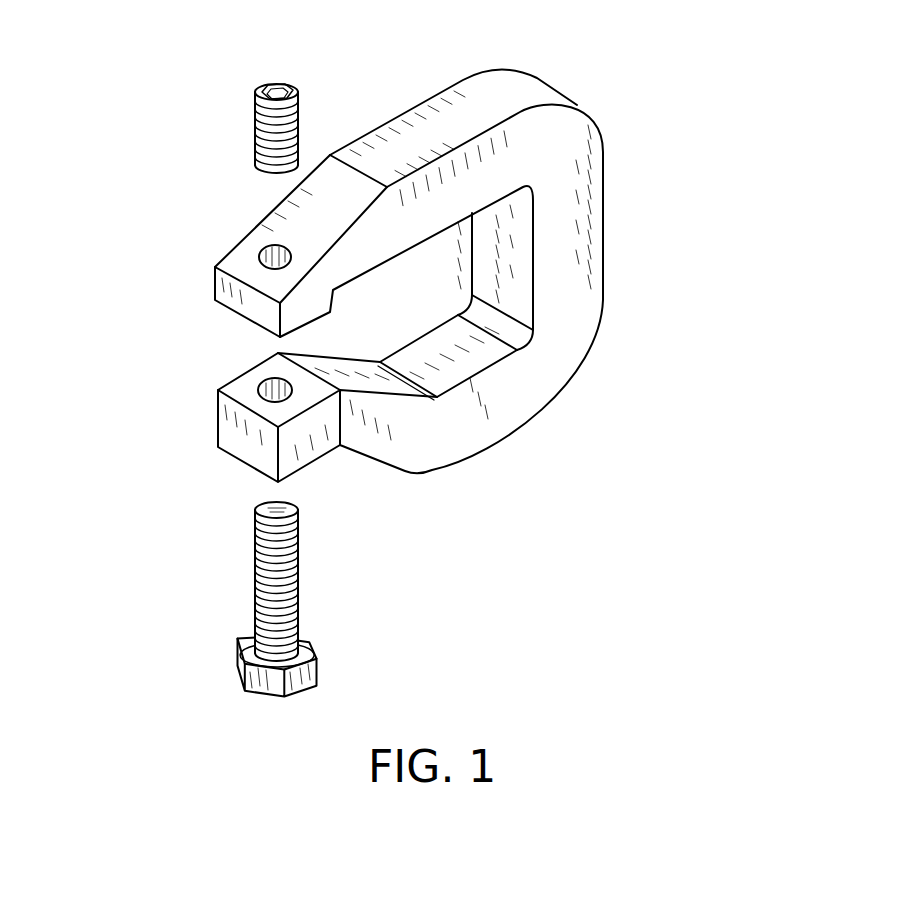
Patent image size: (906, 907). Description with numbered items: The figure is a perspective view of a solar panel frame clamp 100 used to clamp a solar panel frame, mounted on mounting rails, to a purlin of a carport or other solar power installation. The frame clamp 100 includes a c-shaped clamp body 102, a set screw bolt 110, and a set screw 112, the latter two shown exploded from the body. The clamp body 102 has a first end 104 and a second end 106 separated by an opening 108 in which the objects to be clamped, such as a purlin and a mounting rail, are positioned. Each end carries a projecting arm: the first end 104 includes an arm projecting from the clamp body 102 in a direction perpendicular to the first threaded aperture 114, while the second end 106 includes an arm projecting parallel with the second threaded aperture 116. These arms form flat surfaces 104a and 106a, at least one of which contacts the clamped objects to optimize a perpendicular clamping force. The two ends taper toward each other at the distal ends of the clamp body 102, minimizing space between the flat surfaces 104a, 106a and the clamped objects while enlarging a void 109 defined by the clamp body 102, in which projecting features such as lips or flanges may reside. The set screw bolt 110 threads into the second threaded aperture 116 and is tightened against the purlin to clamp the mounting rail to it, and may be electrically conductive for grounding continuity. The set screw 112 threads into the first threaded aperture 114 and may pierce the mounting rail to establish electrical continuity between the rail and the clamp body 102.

The solar panel frame clamp 100 is at (436, 41).
The clamp body 102 is at (614, 219).
The first end 104 is at (213, 476).
The flat surface 104a is at (270, 415).
The second end 106 is at (225, 196).
The flat surface 106a is at (235, 316).
The opening 108 is at (266, 354).
The void 109 is at (457, 291).
The set screw bolt 110 is at (255, 597).
The set screw 112 is at (255, 132).
The first threaded aperture 114 is at (270, 393).
The second threaded aperture 116 is at (273, 257).